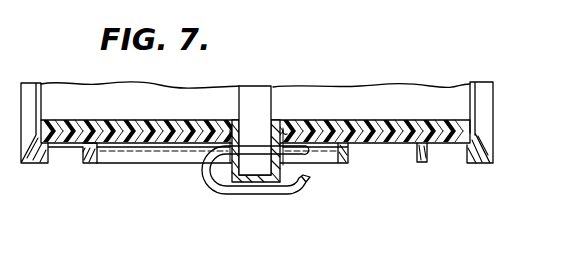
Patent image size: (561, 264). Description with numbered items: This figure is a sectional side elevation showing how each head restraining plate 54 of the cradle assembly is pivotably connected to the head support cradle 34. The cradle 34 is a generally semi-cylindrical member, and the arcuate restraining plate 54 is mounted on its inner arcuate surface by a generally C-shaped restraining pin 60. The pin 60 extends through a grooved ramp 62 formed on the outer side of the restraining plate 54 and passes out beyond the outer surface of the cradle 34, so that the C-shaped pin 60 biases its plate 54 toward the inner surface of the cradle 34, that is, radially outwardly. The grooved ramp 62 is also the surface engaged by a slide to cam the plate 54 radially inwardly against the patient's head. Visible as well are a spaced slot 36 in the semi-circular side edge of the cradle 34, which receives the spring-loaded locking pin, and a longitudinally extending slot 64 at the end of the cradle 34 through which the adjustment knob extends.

The head support cradle 34 is at (466, 152).
The spaced slots 36 is at (32, 161).
The head restraining plate 54 is at (438, 118).
The C-shaped restraining pin 60 is at (292, 188).
The grooved ramp 62 is at (234, 173).
The longitudinally extending slot 64 is at (284, 132).